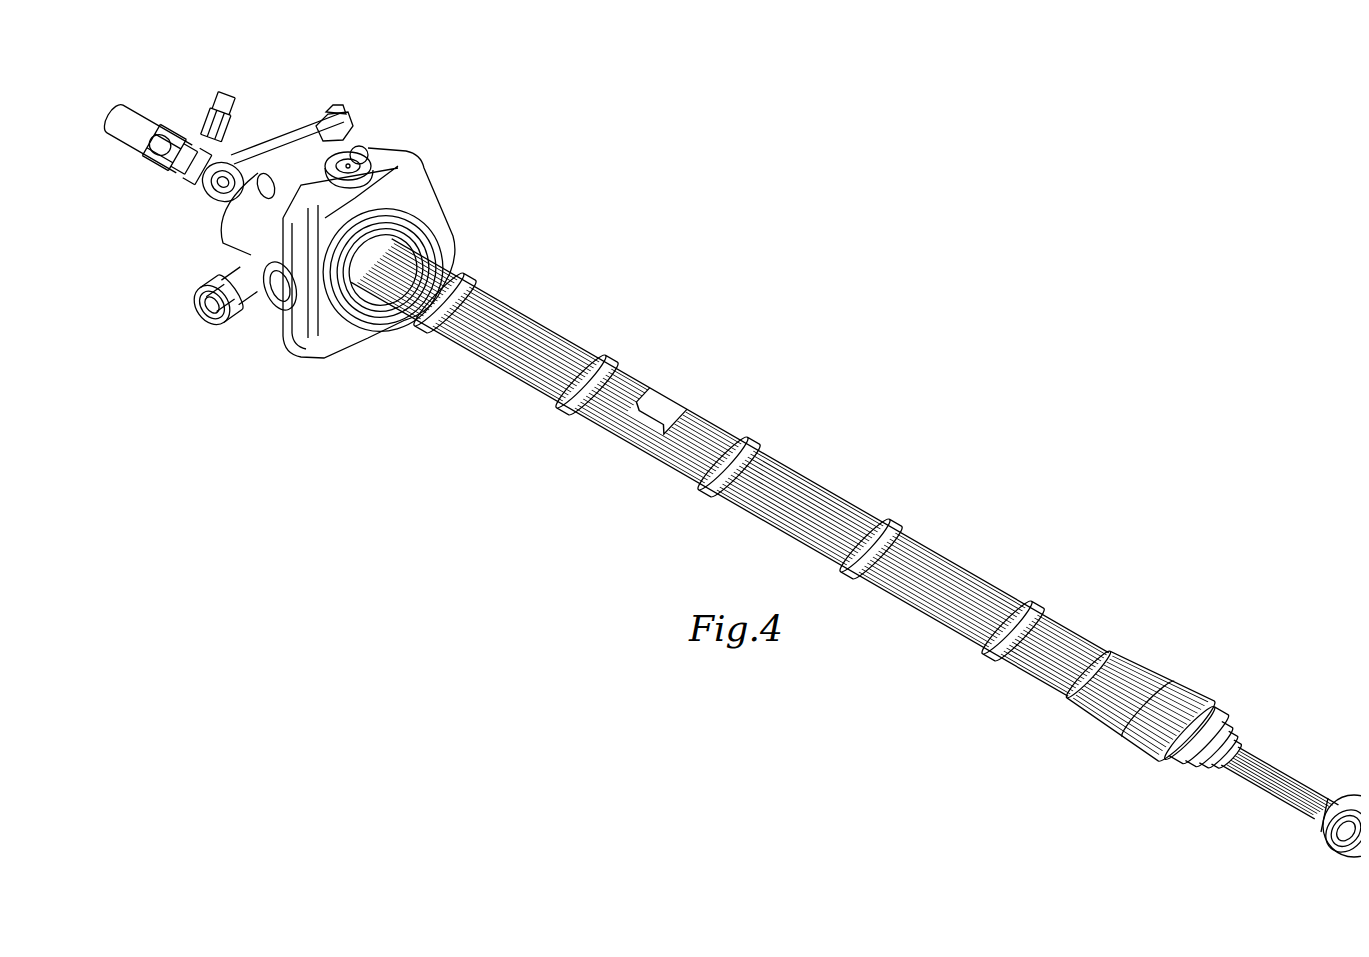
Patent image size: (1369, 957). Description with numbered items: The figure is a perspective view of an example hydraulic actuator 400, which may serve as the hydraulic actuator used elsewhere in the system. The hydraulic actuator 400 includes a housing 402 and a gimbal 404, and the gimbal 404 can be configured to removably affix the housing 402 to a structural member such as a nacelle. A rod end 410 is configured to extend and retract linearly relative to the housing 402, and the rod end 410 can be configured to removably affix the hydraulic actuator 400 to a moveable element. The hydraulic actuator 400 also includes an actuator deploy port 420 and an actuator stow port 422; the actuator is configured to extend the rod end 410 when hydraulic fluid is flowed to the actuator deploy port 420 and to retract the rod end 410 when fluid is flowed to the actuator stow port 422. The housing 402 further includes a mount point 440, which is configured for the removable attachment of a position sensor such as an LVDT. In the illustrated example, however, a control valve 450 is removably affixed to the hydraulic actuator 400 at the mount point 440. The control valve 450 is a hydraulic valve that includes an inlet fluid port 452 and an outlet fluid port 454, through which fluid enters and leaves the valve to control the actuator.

The hydraulic actuator 400 is at (703, 292).
The housing 402 is at (555, 317).
The gimbal 404 is at (283, 343).
The rod end 410 is at (1350, 788).
The actuator deploy port 420 is at (195, 318).
The actuator stow port 422 is at (328, 110).
The mount point 440 is at (223, 147).
The control valve 450 is at (102, 128).
The inlet fluid port 452 is at (130, 148).
The outlet fluid port 454 is at (214, 88).